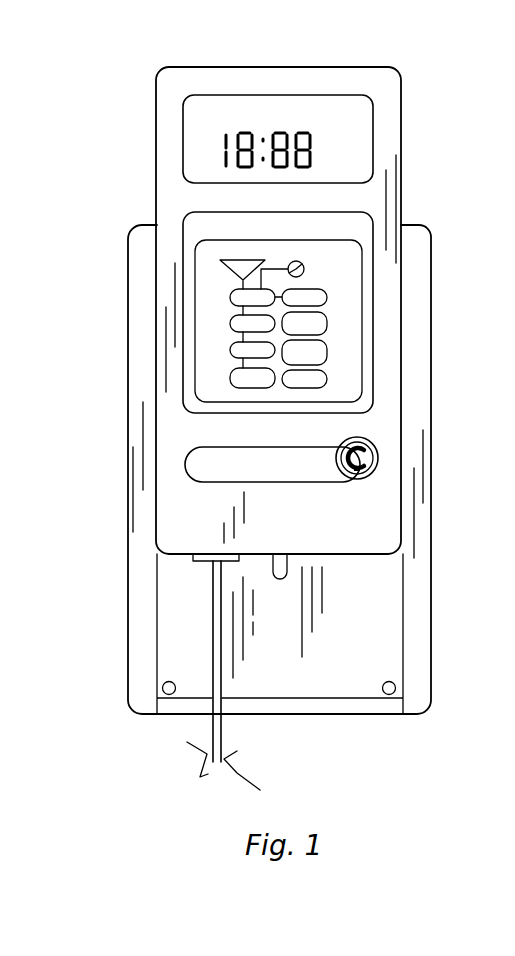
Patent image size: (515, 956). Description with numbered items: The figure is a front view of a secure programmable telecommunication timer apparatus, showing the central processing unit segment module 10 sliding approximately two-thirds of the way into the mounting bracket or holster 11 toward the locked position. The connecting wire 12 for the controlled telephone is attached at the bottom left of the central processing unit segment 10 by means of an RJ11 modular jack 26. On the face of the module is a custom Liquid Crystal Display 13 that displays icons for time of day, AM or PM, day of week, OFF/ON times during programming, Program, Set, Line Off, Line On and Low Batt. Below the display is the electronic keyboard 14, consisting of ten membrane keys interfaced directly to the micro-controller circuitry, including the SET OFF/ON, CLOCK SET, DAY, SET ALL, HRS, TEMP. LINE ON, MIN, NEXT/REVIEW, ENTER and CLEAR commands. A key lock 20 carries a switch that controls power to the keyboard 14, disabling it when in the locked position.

The central processing unit segment module 10 is at (390, 140).
The mounting bracket or holster 11 is at (410, 633).
The connecting wire 12 is at (217, 750).
The Liquid Crystal Display (LCD) 13 is at (195, 140).
The electronic keyboard 14 is at (328, 317).
The key lock 20 is at (365, 442).
The RJ11 modular jack 26 is at (197, 561).